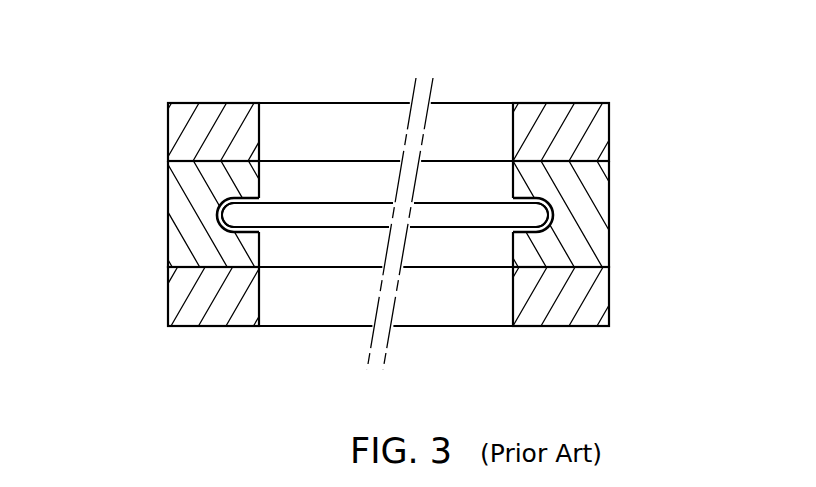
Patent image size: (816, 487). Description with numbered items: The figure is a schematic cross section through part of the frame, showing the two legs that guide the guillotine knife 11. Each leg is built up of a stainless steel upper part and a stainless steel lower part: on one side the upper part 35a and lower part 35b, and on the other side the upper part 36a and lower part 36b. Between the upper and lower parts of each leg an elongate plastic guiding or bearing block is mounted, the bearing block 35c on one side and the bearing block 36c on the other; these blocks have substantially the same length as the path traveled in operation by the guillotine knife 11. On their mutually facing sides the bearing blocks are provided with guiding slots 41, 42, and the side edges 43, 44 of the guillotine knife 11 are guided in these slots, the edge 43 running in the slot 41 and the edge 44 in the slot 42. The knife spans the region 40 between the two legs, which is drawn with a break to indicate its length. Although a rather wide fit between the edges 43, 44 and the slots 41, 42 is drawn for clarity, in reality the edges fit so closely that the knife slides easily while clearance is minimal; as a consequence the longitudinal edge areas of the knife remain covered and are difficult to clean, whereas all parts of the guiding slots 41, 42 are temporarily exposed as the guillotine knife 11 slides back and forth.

The guillotine knife 11 is at (460, 215).
The upper part of leg 35a is at (572, 120).
The lower part of leg 35b is at (583, 313).
The bearing block 35c is at (588, 247).
The upper part of leg 36a is at (193, 118).
The lower part of leg 36b is at (188, 315).
The bearing block 36c is at (193, 207).
The housing body 40 is at (328, 128).
The guiding slot 41 is at (552, 201).
The guiding slot 42 is at (226, 208).
The side edge of guillotine knife 43 is at (548, 215).
The side edge of guillotine knife 44 is at (232, 216).